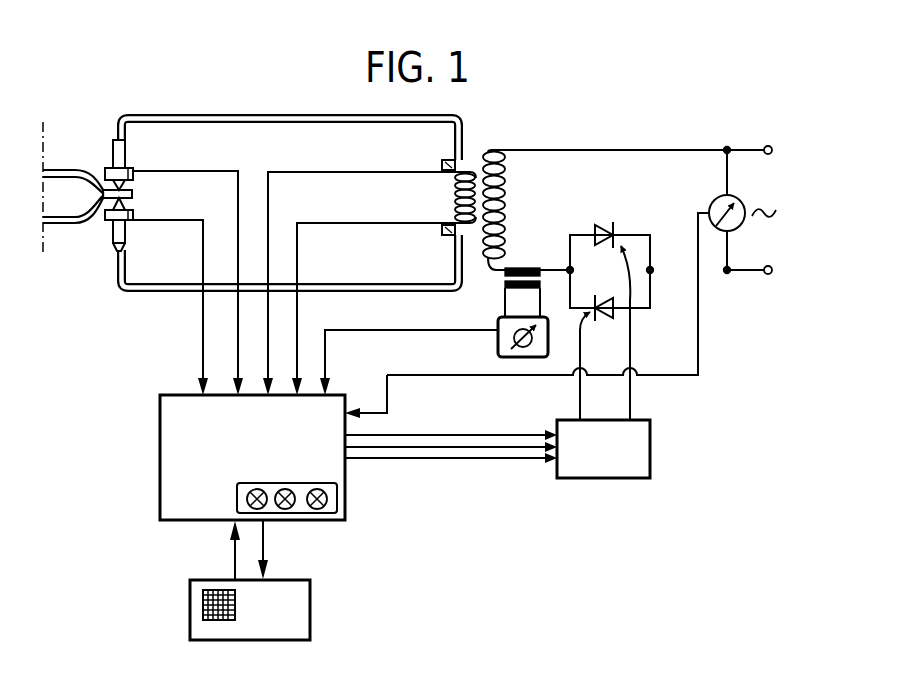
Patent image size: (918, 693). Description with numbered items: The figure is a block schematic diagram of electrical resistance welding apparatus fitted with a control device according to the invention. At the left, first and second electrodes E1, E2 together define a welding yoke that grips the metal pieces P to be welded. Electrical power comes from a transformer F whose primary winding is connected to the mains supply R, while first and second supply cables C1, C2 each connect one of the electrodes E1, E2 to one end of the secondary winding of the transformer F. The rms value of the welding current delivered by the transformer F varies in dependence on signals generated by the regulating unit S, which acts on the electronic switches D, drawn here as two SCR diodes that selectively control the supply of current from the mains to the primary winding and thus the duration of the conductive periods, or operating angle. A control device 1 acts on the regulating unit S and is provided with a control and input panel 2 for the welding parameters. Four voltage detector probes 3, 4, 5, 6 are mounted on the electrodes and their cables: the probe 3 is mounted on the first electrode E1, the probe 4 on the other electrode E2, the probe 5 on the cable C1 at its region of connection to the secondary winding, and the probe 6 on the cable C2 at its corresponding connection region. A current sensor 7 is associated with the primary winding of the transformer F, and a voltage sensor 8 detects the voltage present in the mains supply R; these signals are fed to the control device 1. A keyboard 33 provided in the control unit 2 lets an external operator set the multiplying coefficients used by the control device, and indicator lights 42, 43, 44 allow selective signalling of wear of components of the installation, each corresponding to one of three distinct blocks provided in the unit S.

The metal pieces P is at (58, 170).
The first electrode E1 is at (116, 158).
The second electrode E2 is at (113, 236).
The first supply cable C1 is at (283, 114).
The second supply cable C2 is at (318, 283).
The voltage detector probe 3 is at (134, 170).
The voltage detector probe 4 is at (134, 218).
The voltage detector probe 5 is at (442, 160).
The voltage detector probe 6 is at (442, 233).
The transformer F is at (481, 136).
The current sensor 7 is at (498, 322).
The voltage sensor 8 is at (716, 197).
The electronic switches D is at (583, 270).
The mains supply R is at (779, 192).
The regulating unit S is at (650, 446).
The control device 1 is at (175, 443).
The control and input panel 2 is at (290, 603).
The keyboard 33 is at (203, 605).
The indicator light 42 is at (257, 489).
The indicator light 43 is at (285, 489).
The indicator light 44 is at (317, 489).